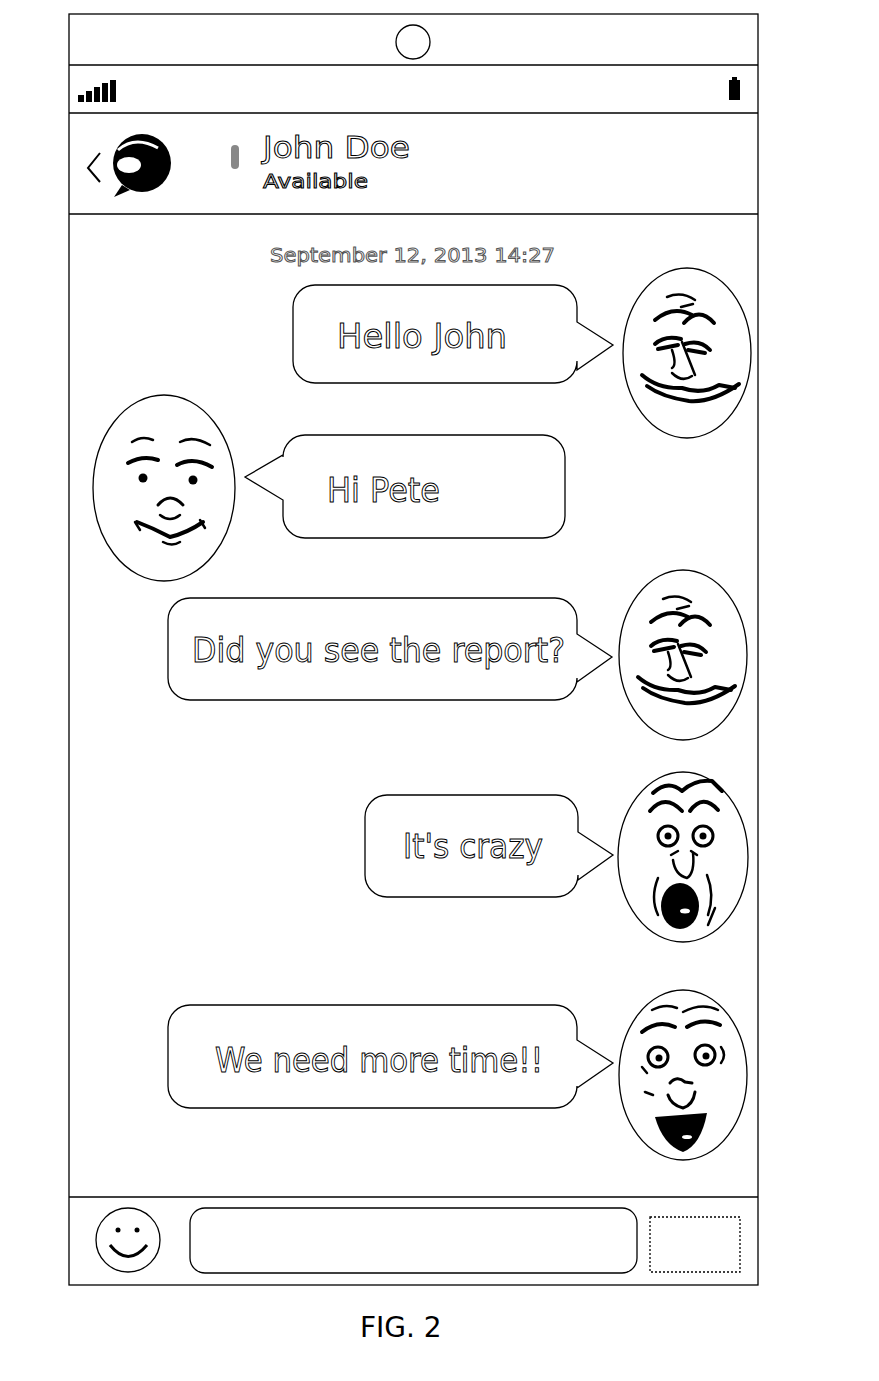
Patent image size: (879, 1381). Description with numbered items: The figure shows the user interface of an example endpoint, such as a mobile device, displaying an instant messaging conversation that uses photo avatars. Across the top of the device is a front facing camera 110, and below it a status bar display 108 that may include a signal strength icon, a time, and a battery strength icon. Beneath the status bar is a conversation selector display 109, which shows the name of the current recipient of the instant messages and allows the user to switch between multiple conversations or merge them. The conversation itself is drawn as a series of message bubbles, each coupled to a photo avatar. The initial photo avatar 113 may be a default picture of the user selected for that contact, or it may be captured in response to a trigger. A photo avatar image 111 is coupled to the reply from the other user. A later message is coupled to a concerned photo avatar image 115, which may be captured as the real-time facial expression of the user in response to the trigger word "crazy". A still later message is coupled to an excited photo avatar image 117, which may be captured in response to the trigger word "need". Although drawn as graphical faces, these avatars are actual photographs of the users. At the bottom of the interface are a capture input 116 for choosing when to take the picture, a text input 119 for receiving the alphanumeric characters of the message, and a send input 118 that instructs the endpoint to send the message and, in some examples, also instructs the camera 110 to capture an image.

The status bar display 108 is at (598, 70).
The conversation selector display 109 is at (69, 160).
The front facing camera 110 is at (396, 43).
The photo avatar image 111 is at (153, 397).
The initial photo avatar 113 is at (655, 279).
The concerned photo avatar image 115 is at (632, 806).
The capture input 116 is at (138, 1210).
The excited photo avatar image 117 is at (632, 1026).
The send input 118 is at (668, 1215).
The text input 119 is at (262, 1208).